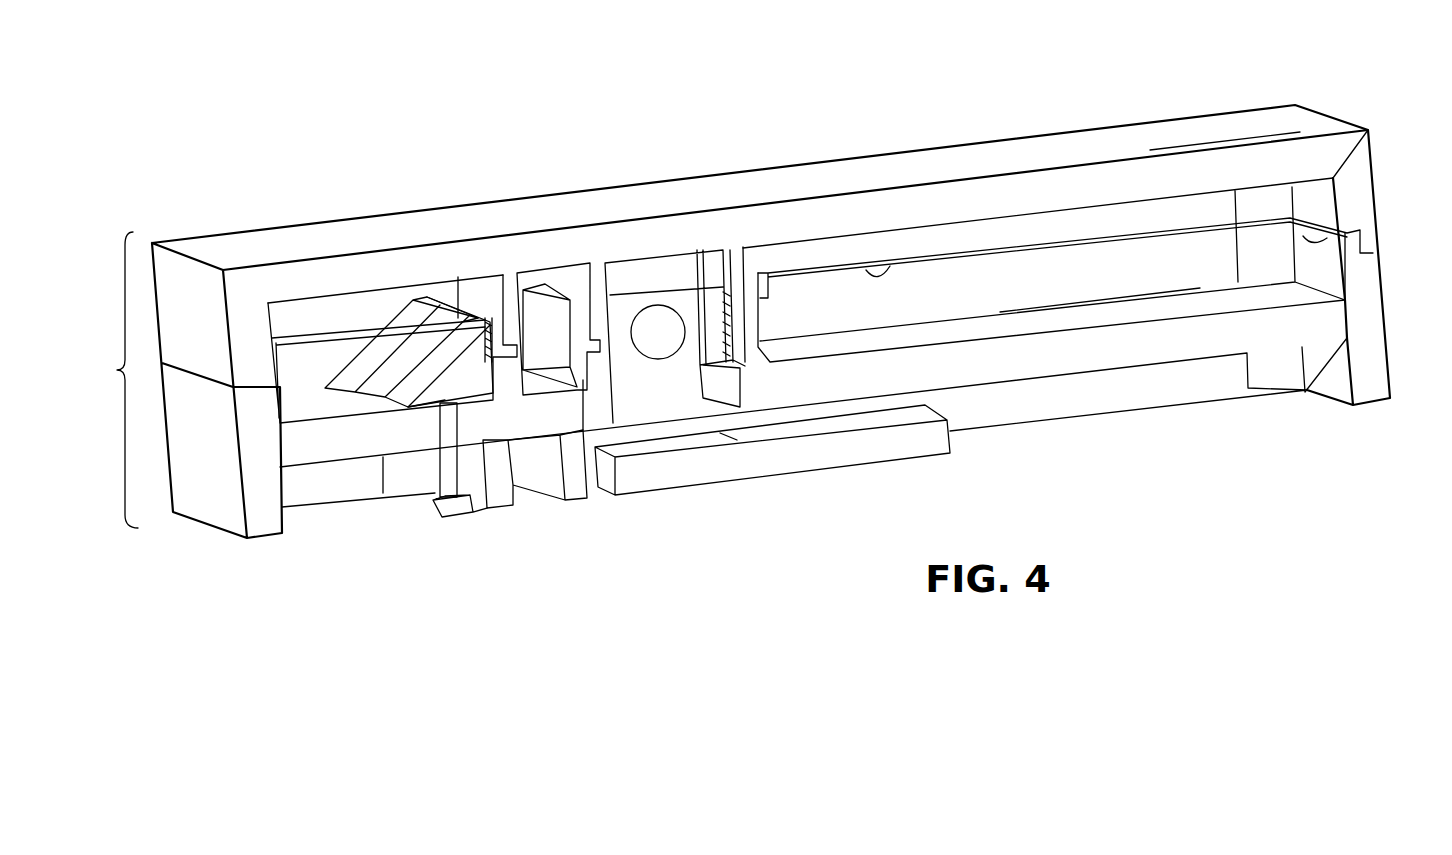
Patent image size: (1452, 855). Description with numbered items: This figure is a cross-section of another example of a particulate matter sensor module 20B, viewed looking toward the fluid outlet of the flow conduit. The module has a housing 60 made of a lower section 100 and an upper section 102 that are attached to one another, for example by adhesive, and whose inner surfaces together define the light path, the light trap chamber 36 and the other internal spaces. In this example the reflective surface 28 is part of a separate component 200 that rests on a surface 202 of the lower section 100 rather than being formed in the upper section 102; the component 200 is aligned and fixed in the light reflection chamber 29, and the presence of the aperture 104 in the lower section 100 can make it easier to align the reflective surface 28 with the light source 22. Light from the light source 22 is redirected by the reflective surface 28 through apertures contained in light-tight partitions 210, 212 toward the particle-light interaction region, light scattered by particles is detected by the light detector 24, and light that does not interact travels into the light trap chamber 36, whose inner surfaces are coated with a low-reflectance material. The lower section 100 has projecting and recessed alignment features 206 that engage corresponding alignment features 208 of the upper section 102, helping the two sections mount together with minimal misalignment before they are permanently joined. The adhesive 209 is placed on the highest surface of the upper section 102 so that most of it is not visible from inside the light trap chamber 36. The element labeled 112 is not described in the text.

The particulate matter sensor module 20B is at (1148, 96).
The light reflection chamber 29 is at (287, 318).
The component 200 is at (320, 373).
The reflective surface 28 is at (478, 304).
The partition 210 is at (489, 308).
The partition 212 is at (570, 290).
The aperture 112 is at (655, 345).
The adhesive 209 is at (872, 276).
The upper section 102 is at (1355, 165).
The alignment features 208 is at (1370, 237).
The alignment features 206 is at (1347, 252).
The lower section 100 is at (1390, 353).
The light trap chamber 36 is at (1078, 283).
The light detector 24 is at (745, 483).
The housing 60 is at (109, 380).
The surface 202 is at (445, 387).
The light source 22 is at (457, 515).
The aperture 104 is at (454, 432).